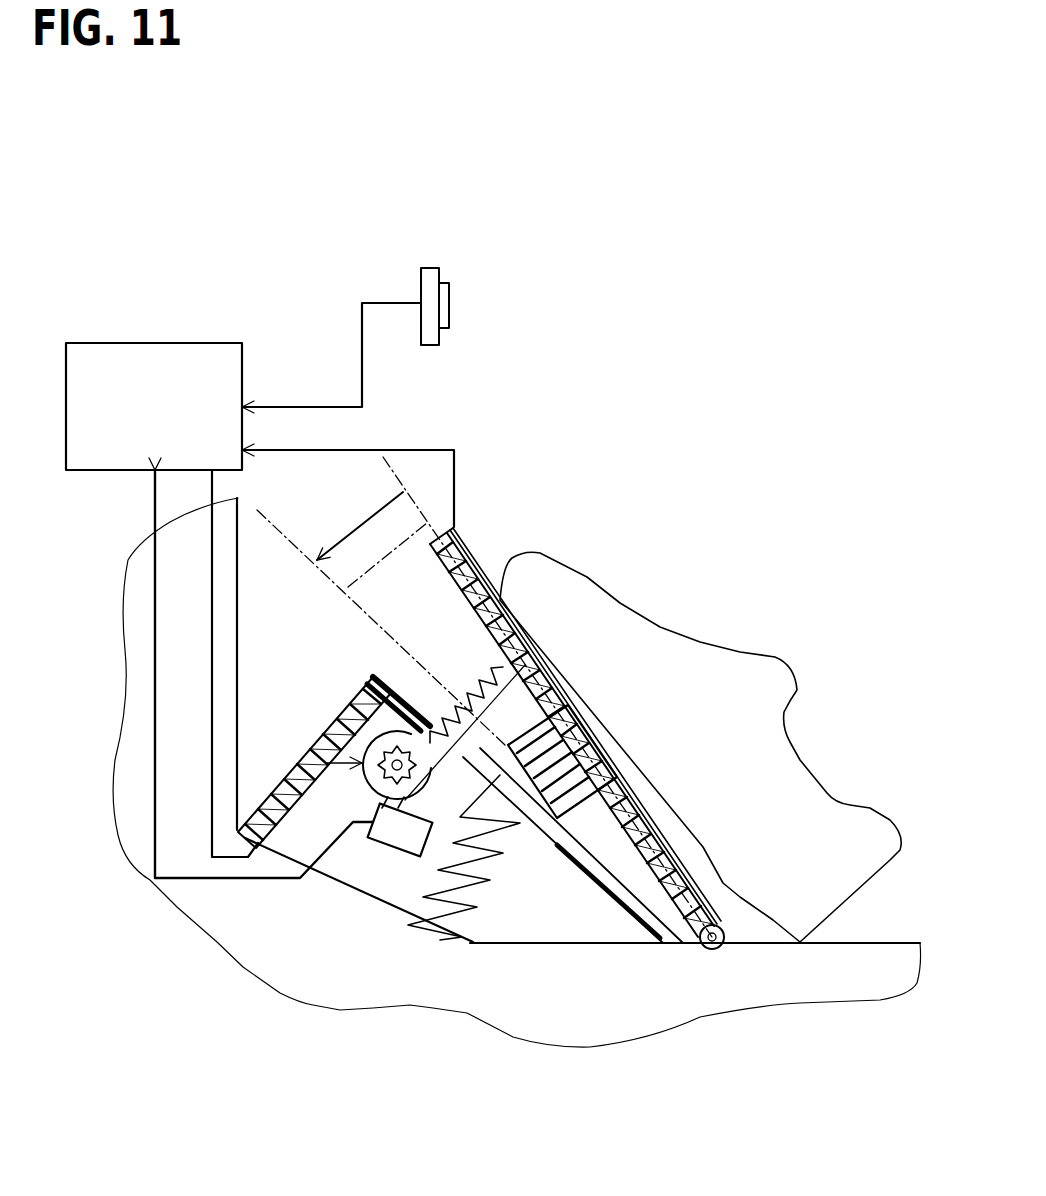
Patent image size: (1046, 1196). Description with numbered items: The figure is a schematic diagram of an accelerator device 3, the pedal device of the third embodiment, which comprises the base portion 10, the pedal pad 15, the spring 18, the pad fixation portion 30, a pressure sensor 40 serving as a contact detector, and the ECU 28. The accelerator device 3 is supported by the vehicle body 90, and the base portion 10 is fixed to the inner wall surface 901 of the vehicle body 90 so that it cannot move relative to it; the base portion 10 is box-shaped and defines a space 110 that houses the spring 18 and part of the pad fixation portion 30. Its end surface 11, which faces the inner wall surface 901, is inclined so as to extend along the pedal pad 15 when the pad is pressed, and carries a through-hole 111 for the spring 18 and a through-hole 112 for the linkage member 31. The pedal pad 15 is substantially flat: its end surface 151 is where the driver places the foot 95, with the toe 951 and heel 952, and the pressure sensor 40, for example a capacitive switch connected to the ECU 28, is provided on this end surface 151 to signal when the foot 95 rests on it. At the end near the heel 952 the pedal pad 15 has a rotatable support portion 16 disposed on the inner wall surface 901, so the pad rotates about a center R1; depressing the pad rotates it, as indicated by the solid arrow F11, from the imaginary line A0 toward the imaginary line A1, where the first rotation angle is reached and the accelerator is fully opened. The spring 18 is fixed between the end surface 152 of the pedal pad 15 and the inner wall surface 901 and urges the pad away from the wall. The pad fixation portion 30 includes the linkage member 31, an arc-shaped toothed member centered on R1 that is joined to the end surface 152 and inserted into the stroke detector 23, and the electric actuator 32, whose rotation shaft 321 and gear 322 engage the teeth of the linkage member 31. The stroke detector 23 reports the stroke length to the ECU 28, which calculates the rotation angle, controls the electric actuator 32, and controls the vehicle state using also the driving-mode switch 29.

The accelerator device 3 is at (507, 447).
The base portion 10 is at (327, 730).
The end surface 11 is at (410, 745).
The pedal pad 15 is at (647, 807).
The rotatable support portion 16 is at (718, 925).
The spring 18 is at (473, 945).
The stroke detector 23 is at (377, 806).
The engine control unit (ECU) 28 is at (66, 400).
The switch 29 is at (449, 305).
The pad fixation portion 30 is at (386, 850).
The linkage member 31 is at (548, 718).
The electric actuator 32 is at (375, 720).
The pressure sensor 40 is at (570, 690).
The vehicle body 90 is at (128, 795).
The foot 95 is at (777, 650).
The space 110 is at (528, 945).
The through-hole 111 is at (545, 835).
The through-hole 112 is at (450, 712).
The end surface 151 is at (484, 585).
The end surface 152 is at (618, 865).
The rotation shaft 321 is at (385, 700).
The gear 322 is at (405, 693).
The inner wall surface 901 is at (562, 945).
The toe 951 is at (540, 575).
The heel 952 is at (800, 945).
The imaginary line A0 is at (383, 468).
The imaginary line A1 is at (290, 540).
The arrow F11 is at (350, 535).
The center R1 is at (712, 950).